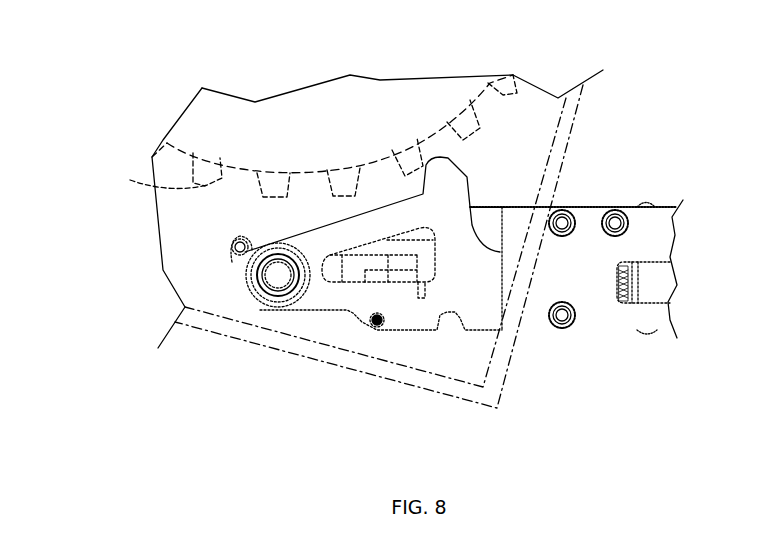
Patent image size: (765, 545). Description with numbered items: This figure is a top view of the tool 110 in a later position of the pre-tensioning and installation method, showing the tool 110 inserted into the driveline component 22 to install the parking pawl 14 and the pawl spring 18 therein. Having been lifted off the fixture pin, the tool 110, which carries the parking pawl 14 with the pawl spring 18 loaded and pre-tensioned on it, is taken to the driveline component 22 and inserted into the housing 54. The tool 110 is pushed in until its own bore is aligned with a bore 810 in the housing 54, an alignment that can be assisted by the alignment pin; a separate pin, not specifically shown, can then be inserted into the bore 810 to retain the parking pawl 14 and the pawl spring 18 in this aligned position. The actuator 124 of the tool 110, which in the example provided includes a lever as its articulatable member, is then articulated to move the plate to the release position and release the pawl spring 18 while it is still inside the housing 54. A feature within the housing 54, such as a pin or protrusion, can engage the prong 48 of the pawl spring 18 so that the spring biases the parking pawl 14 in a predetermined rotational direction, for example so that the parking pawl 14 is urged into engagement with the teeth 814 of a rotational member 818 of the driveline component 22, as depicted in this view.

The parking pawl 14 is at (450, 195).
The pawl spring 18 is at (295, 295).
The driveline component 22 is at (573, 124).
The prong 48 is at (233, 262).
The housing 54 is at (500, 400).
The tool 110 is at (663, 208).
The actuator 124 is at (623, 303).
The bore 810 is at (257, 308).
The teeth 814 is at (207, 186).
The rotational member 818 is at (310, 157).